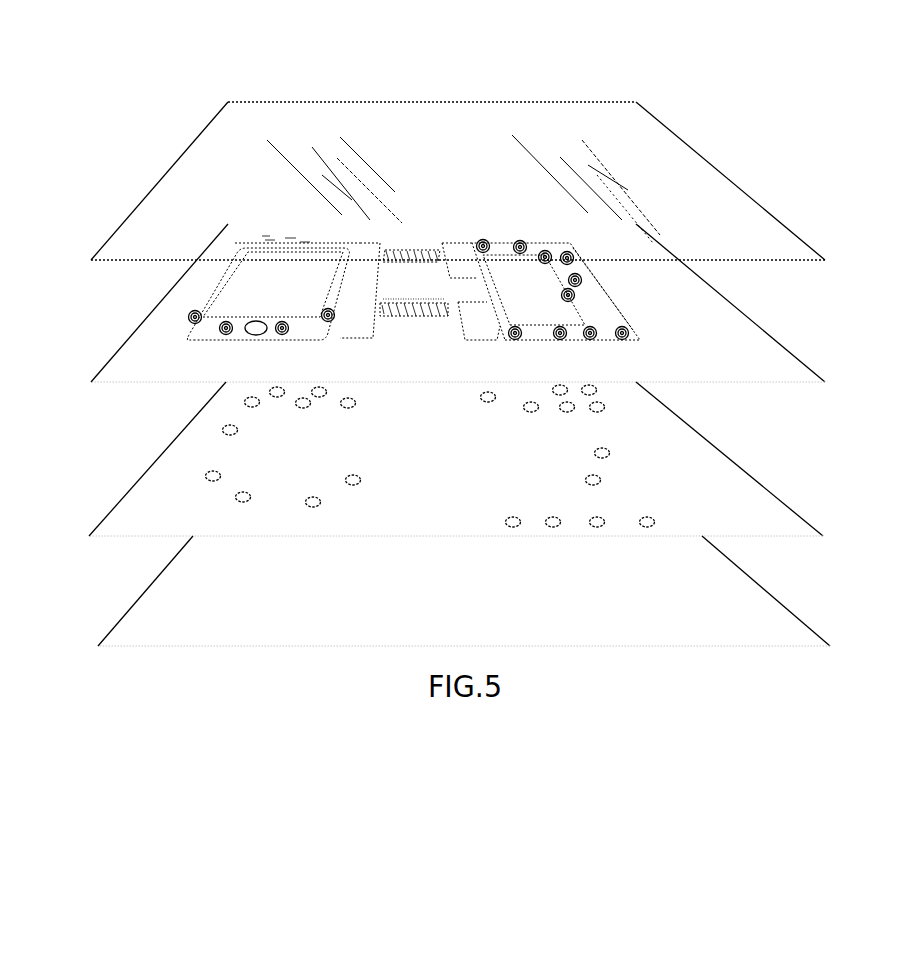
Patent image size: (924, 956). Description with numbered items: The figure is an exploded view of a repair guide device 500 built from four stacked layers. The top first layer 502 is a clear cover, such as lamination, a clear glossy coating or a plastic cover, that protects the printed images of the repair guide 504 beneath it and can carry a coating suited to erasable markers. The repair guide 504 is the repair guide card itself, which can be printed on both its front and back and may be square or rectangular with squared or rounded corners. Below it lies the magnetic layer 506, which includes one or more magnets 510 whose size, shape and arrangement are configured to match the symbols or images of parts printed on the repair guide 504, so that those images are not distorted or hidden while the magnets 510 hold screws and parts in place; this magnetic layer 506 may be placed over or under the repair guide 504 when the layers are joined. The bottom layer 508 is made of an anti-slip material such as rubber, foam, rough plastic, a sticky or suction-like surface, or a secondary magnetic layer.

The repair guide device 500 is at (812, 93).
The first layer 502 is at (197, 168).
The repair guide 504 is at (160, 312).
The magnetic layer 506 is at (717, 468).
The bottom layer 508 is at (765, 612).
The magnets 510 is at (203, 478).